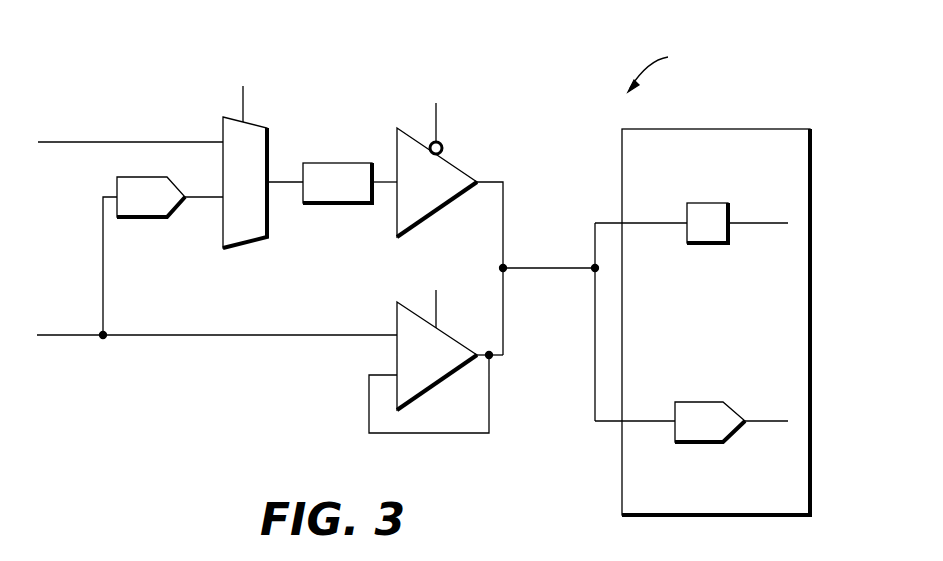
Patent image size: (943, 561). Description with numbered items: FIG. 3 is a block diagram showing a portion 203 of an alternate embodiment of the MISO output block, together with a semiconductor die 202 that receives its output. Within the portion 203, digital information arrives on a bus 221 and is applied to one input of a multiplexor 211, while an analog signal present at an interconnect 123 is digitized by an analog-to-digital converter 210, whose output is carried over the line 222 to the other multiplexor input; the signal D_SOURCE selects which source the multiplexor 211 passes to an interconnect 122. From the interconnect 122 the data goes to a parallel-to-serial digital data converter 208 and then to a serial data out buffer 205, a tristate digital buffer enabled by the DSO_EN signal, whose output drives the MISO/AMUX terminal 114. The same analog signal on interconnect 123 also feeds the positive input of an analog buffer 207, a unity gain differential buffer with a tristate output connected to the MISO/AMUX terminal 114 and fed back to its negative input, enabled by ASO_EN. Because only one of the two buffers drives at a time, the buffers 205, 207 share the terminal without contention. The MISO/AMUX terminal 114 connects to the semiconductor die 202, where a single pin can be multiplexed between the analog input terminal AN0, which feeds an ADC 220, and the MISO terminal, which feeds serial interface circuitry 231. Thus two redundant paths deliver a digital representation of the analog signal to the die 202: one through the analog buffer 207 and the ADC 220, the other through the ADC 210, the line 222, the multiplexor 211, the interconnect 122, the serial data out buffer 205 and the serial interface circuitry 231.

The portion 203 is at (494, 65).
The bus 221 is at (91, 141).
The analog-to-digital converter 210 is at (170, 177).
The ADC output line 222 is at (193, 201).
The multiplexor 211 is at (257, 125).
The parallel-to-serial digital data converter 208 is at (334, 163).
The bus 122 is at (380, 185).
The serial data out buffer 205 is at (459, 172).
The analog buffer 207 is at (448, 337).
The interconnect 123 is at (93, 335).
The MISO/AMUX terminal 114 is at (520, 268).
The semiconductor die 202 is at (760, 129).
The serial interface circuitry 231 is at (710, 203).
The ADC 220 is at (697, 402).